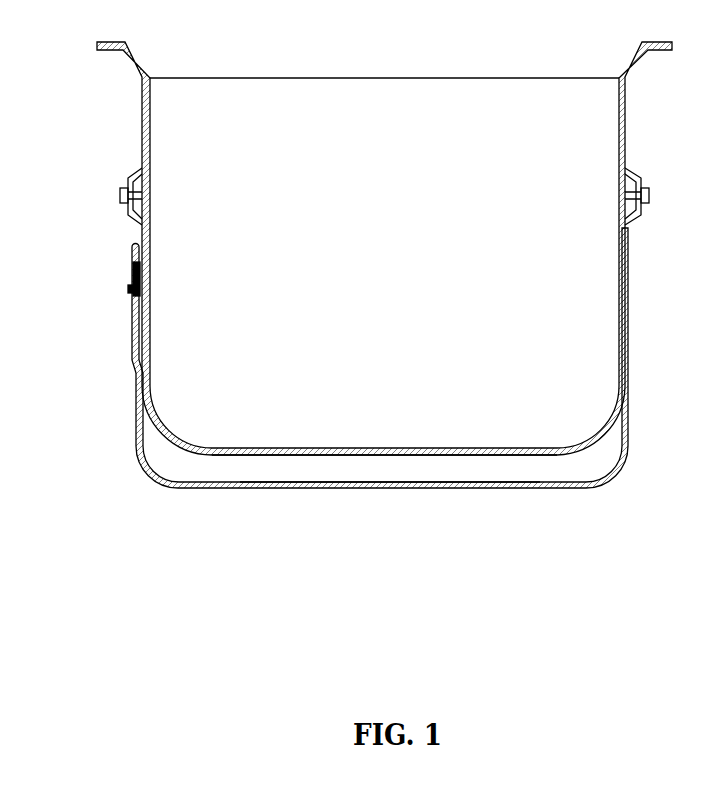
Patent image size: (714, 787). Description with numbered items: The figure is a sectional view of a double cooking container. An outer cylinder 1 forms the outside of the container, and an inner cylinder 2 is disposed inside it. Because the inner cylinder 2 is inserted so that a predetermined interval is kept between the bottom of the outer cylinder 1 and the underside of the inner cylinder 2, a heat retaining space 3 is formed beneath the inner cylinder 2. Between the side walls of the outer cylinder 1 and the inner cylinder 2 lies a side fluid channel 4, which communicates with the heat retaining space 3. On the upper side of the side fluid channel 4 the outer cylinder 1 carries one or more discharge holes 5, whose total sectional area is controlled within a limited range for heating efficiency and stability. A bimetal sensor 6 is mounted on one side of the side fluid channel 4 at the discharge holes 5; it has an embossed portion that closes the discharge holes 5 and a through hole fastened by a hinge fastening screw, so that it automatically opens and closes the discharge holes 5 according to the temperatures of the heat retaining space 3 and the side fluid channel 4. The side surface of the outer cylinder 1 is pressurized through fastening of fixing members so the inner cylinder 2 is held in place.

The outer cylinder 1 is at (385, 487).
The inner cylinder 2 is at (300, 450).
The heat retaining space 3 is at (507, 474).
The side fluid channel 4 is at (132, 332).
The discharge holes 5 is at (132, 267).
The bimetal sensor 6 is at (114, 242).